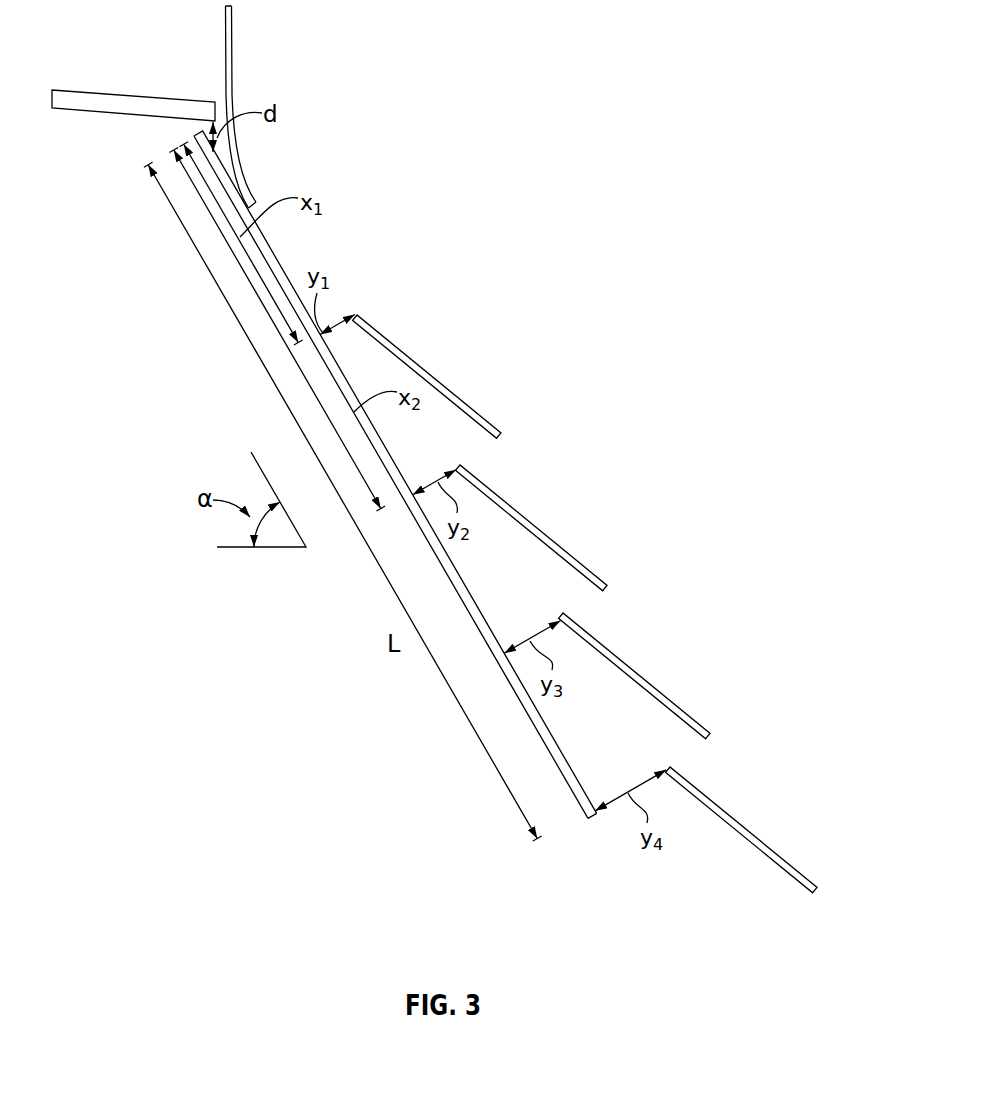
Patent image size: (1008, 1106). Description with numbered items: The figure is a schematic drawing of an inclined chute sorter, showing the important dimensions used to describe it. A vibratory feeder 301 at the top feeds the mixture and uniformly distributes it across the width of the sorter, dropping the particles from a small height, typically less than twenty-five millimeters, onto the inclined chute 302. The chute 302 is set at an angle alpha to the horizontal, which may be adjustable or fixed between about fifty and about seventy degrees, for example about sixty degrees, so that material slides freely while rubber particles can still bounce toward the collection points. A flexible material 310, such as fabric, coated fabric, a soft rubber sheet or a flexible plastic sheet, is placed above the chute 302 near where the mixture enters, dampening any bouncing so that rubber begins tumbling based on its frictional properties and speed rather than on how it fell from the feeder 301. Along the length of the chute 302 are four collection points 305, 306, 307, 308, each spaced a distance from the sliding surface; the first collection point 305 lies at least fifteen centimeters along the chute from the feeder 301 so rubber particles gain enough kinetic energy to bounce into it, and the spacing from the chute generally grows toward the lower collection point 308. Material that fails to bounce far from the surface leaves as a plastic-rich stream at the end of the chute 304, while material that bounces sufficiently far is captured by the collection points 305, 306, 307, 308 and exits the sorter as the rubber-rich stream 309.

The vibratory feeder 301 is at (145, 116).
The inclined chute 302 is at (318, 351).
The end of the chute 304 is at (594, 818).
The first collection point 305 is at (362, 314).
The second collection point 306 is at (468, 467).
The third collection point 307 is at (573, 615).
The collection point at the lower end 308 is at (680, 768).
The rubber-rich stream exit 309 is at (833, 877).
The flexible material 310 is at (233, 75).